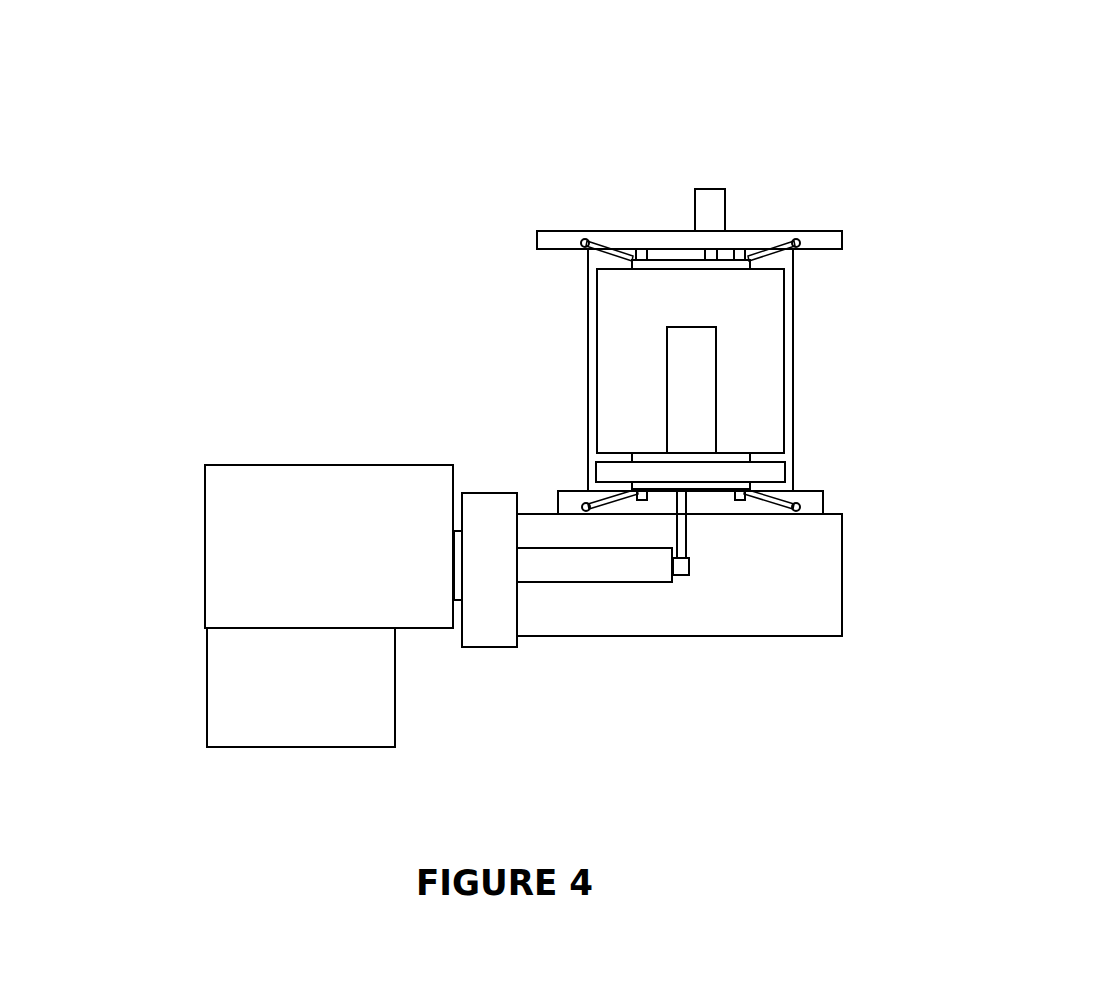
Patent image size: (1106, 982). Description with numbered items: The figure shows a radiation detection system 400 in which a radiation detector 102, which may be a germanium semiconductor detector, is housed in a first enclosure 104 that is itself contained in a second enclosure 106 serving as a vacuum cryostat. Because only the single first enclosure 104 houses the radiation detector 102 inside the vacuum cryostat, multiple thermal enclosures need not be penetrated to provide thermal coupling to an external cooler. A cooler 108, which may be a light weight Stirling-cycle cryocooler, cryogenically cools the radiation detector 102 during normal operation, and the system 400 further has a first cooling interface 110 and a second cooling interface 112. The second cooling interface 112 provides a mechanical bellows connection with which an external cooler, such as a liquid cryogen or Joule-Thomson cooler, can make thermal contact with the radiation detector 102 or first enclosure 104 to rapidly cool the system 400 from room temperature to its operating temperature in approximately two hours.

The radiation detection system 400 is at (1063, 118).
The radiation detector 102 is at (762, 364).
The first enclosure 104 is at (784, 307).
The second enclosure 106 is at (793, 277).
The cooler 108 is at (308, 465).
The first cooling interface 110 is at (544, 628).
The second cooling interface 112 is at (759, 197).